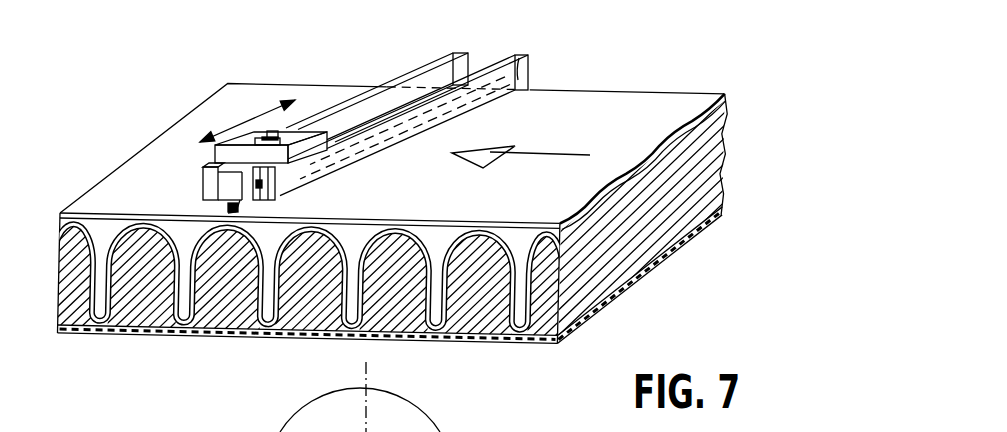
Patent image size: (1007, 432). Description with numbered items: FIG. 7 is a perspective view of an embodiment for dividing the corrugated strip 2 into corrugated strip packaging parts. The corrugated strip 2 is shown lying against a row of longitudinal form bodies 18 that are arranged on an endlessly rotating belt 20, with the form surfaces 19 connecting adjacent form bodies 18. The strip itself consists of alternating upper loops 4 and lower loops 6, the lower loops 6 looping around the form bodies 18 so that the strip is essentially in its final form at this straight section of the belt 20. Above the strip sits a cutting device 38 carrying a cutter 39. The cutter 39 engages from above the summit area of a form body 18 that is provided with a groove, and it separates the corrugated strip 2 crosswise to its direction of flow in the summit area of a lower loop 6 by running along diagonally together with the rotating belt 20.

The corrugated strip 2 is at (598, 120).
The upper loops 4 is at (86, 328).
The lower loops 6 is at (146, 331).
The form bodies 18 is at (235, 277).
The form surfaces 19 is at (269, 323).
The endlessly rotating belt 20 is at (311, 336).
The cutting device 38 is at (522, 57).
The cutter 39 is at (230, 213).